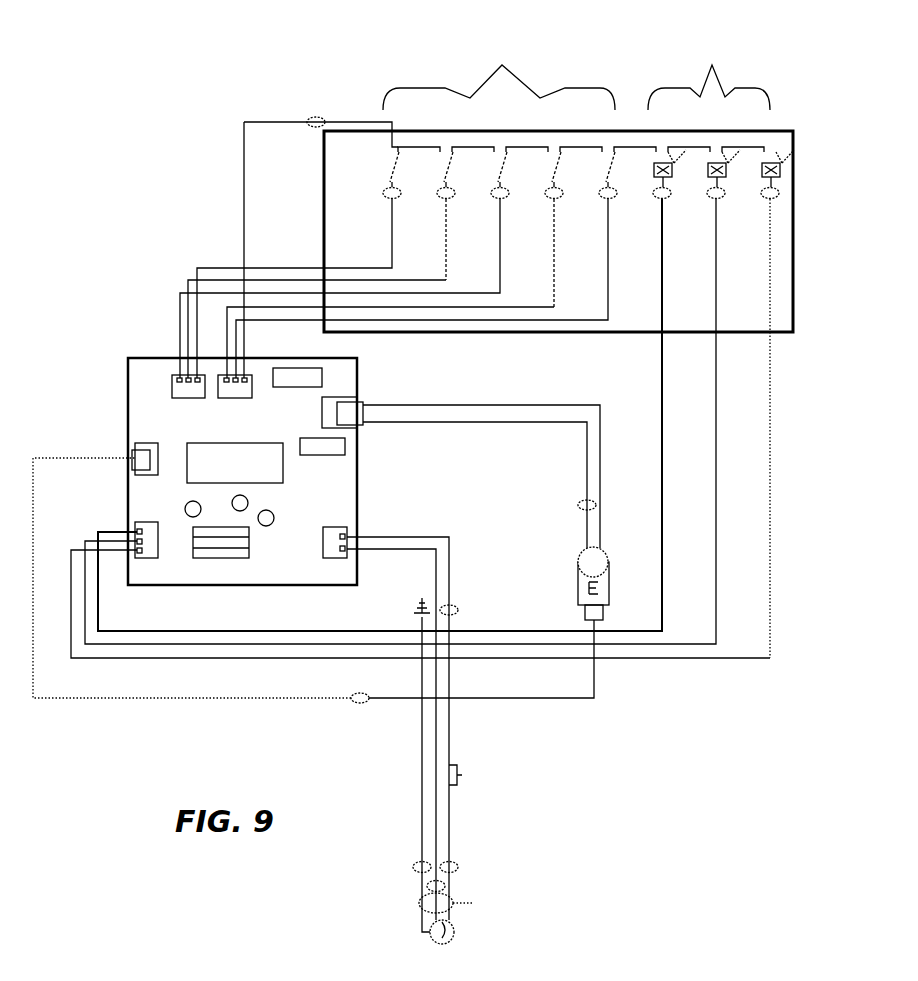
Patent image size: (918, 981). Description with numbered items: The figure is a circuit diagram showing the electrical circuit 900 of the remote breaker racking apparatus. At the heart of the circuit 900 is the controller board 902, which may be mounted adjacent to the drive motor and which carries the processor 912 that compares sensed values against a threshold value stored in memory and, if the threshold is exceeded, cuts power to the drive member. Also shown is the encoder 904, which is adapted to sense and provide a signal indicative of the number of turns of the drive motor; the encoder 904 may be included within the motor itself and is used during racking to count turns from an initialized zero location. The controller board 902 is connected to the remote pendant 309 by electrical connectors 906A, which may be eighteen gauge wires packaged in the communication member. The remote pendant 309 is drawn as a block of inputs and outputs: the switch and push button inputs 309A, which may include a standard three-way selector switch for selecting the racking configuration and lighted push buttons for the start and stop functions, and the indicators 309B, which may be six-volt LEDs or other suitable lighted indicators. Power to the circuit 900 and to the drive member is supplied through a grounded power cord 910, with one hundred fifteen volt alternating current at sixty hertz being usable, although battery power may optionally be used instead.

The circuit 900 is at (208, 205).
The controller board 902 is at (137, 354).
The encoder 904 is at (612, 612).
The electrical connector 906A is at (180, 271).
The remote pendant 309 is at (632, 128).
The sensor inputs 309A is at (502, 65).
The indicators 309B is at (712, 65).
The power cord 910 is at (492, 862).
The processor 912 is at (235, 463).